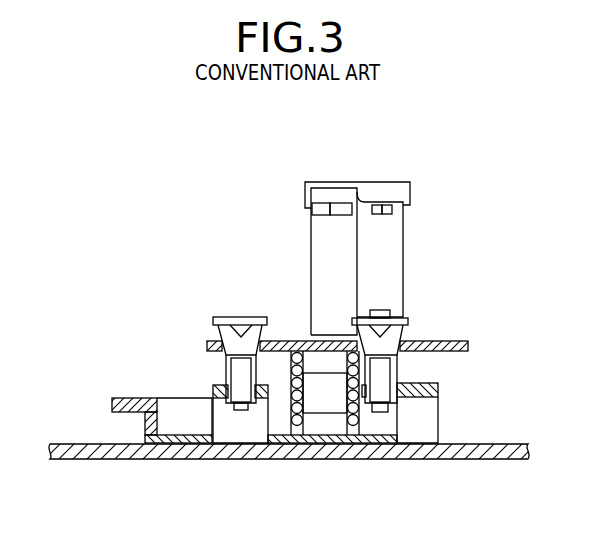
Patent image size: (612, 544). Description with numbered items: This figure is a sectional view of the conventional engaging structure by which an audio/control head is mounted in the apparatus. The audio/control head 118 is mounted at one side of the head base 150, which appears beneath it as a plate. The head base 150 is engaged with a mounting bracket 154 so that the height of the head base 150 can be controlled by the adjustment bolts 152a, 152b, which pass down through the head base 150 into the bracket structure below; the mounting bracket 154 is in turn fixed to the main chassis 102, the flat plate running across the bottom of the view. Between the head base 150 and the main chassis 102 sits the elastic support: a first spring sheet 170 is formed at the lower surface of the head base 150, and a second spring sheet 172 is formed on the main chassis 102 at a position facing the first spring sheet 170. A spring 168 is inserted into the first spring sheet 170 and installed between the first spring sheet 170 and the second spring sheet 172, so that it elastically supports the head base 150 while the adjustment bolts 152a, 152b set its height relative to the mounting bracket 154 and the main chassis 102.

The main chassis 102 is at (465, 448).
The audio/control head 118 is at (338, 247).
The head base 150 is at (450, 339).
The adjustment bolt 152a is at (407, 305).
The adjustment bolt 152b is at (242, 317).
The mounting bracket 154 is at (430, 384).
The spring 168 is at (292, 397).
The first spring sheet 170 is at (313, 363).
The second spring sheet 172 is at (332, 418).